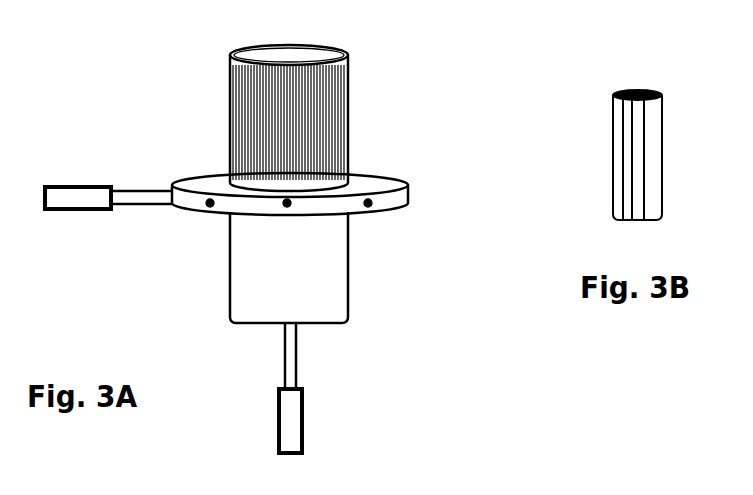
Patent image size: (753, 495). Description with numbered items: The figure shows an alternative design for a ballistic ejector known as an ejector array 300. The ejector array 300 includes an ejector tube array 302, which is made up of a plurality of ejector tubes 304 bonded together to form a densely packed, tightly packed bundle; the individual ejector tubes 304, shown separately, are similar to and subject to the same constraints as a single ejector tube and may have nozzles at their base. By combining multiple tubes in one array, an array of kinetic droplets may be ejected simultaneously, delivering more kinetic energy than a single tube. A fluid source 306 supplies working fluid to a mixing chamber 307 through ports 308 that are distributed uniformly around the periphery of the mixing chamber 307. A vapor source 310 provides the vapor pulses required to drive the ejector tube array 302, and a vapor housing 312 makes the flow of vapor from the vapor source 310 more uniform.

In FIG. 3A, the ejector array 300 is at (127, 60).
In FIG. 3A, the ejector tube array 302 is at (230, 82).
In FIG. 3B, the ejector tubes 304 is at (598, 141).
In FIG. 3A, the fluid source 306 is at (95, 212).
In FIG. 3A, the mixing chamber 307 is at (408, 197).
In FIG. 3A, the ports 308 is at (198, 218).
In FIG. 3A, the vapor source 310 is at (304, 420).
In FIG. 3A, the vapor housing 312 is at (348, 257).